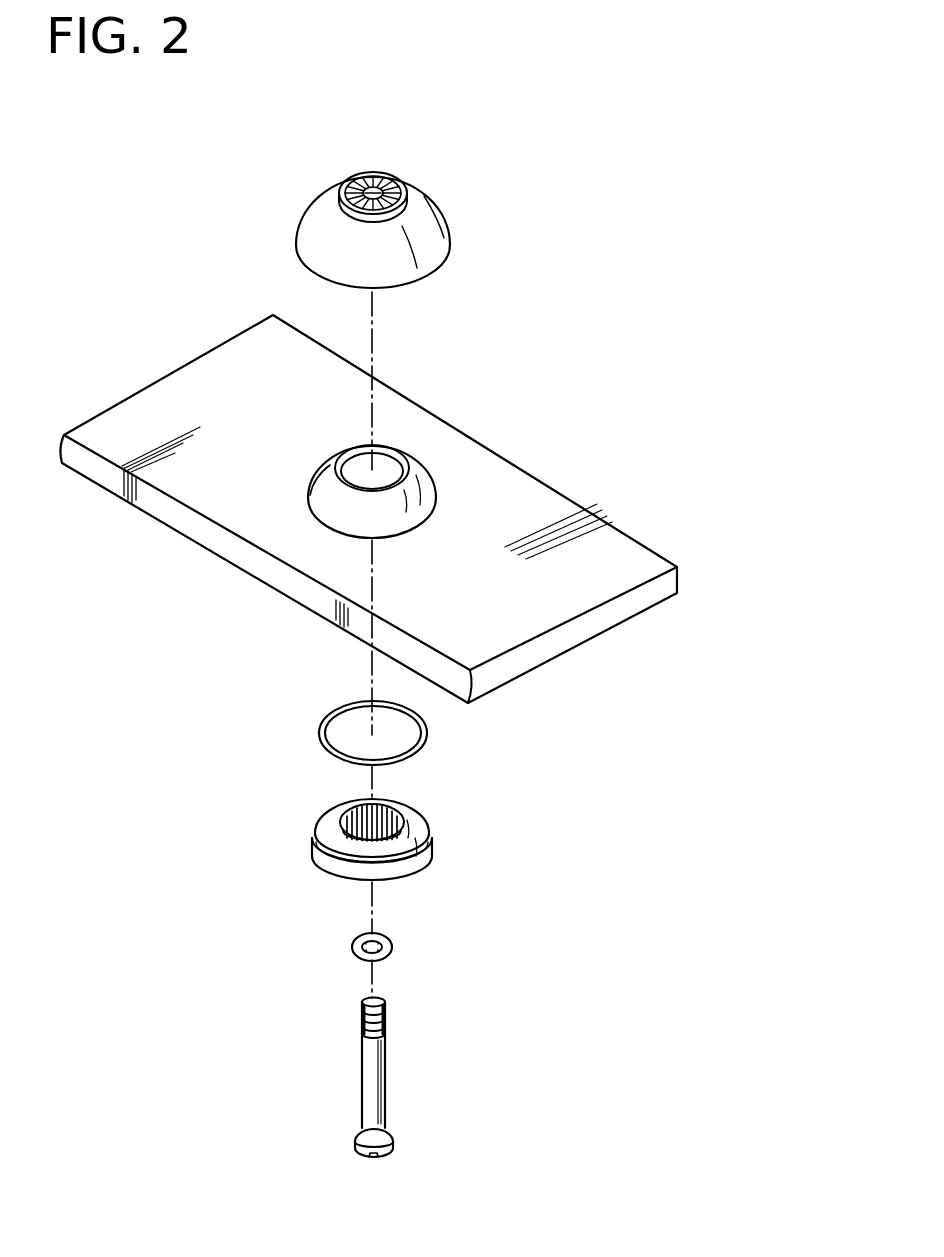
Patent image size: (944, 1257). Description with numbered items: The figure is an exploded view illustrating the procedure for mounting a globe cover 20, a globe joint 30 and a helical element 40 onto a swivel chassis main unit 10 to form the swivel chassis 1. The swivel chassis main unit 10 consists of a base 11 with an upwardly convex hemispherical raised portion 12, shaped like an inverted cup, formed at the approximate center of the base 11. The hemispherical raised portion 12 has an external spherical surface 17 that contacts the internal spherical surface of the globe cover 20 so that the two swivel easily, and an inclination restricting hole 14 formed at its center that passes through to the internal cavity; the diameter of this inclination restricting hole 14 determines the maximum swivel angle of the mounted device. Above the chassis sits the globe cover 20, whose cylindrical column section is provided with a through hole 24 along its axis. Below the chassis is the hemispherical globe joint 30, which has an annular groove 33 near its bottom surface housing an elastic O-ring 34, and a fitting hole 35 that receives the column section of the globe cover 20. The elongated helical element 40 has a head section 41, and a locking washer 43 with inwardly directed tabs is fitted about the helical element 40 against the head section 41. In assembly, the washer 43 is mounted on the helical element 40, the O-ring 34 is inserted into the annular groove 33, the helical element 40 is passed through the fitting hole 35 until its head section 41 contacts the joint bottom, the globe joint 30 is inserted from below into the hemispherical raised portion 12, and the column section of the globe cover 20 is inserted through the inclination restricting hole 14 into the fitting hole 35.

The swivel chassis 1 is at (110, 258).
The swivel chassis main unit 10 is at (355, 509).
The base 11 is at (523, 497).
The hemispherical raised portion 12 is at (354, 497).
The inclination restricting hole 14 is at (398, 450).
The external spherical surface 17 is at (330, 497).
The globe cover 20 is at (359, 204).
The through hole 24 is at (387, 183).
The globe joint 30 is at (370, 860).
The annular groove 33 is at (325, 864).
The O-ring 34 is at (423, 753).
The fitting hole 35 is at (405, 816).
The helical element 40 is at (372, 1081).
The head section 41 is at (355, 1147).
The locking washer 43 is at (397, 953).